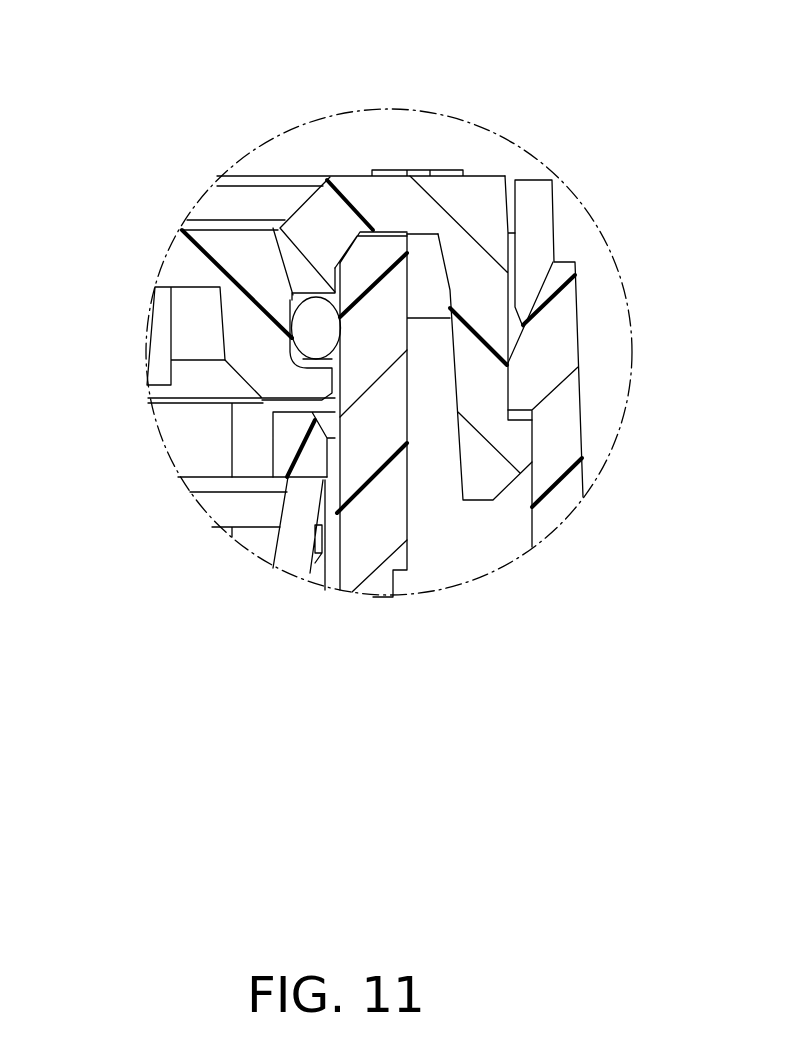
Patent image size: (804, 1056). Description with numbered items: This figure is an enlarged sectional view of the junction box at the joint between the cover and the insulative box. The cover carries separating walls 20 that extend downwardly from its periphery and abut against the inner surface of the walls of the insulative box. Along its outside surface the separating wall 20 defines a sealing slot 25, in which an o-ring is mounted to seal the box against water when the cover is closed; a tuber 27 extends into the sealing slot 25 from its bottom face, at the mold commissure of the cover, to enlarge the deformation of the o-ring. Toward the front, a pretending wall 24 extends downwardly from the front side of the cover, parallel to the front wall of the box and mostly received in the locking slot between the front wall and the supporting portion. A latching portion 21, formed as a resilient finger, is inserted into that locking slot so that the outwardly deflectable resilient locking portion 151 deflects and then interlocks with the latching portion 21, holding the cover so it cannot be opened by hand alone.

The separating wall 20 is at (253, 323).
The latching portion 21 is at (487, 467).
The pretending wall 24 is at (475, 300).
The sealing slot 25 is at (300, 297).
The tuber 27 is at (315, 367).
The resilient locking portion 151 is at (553, 280).